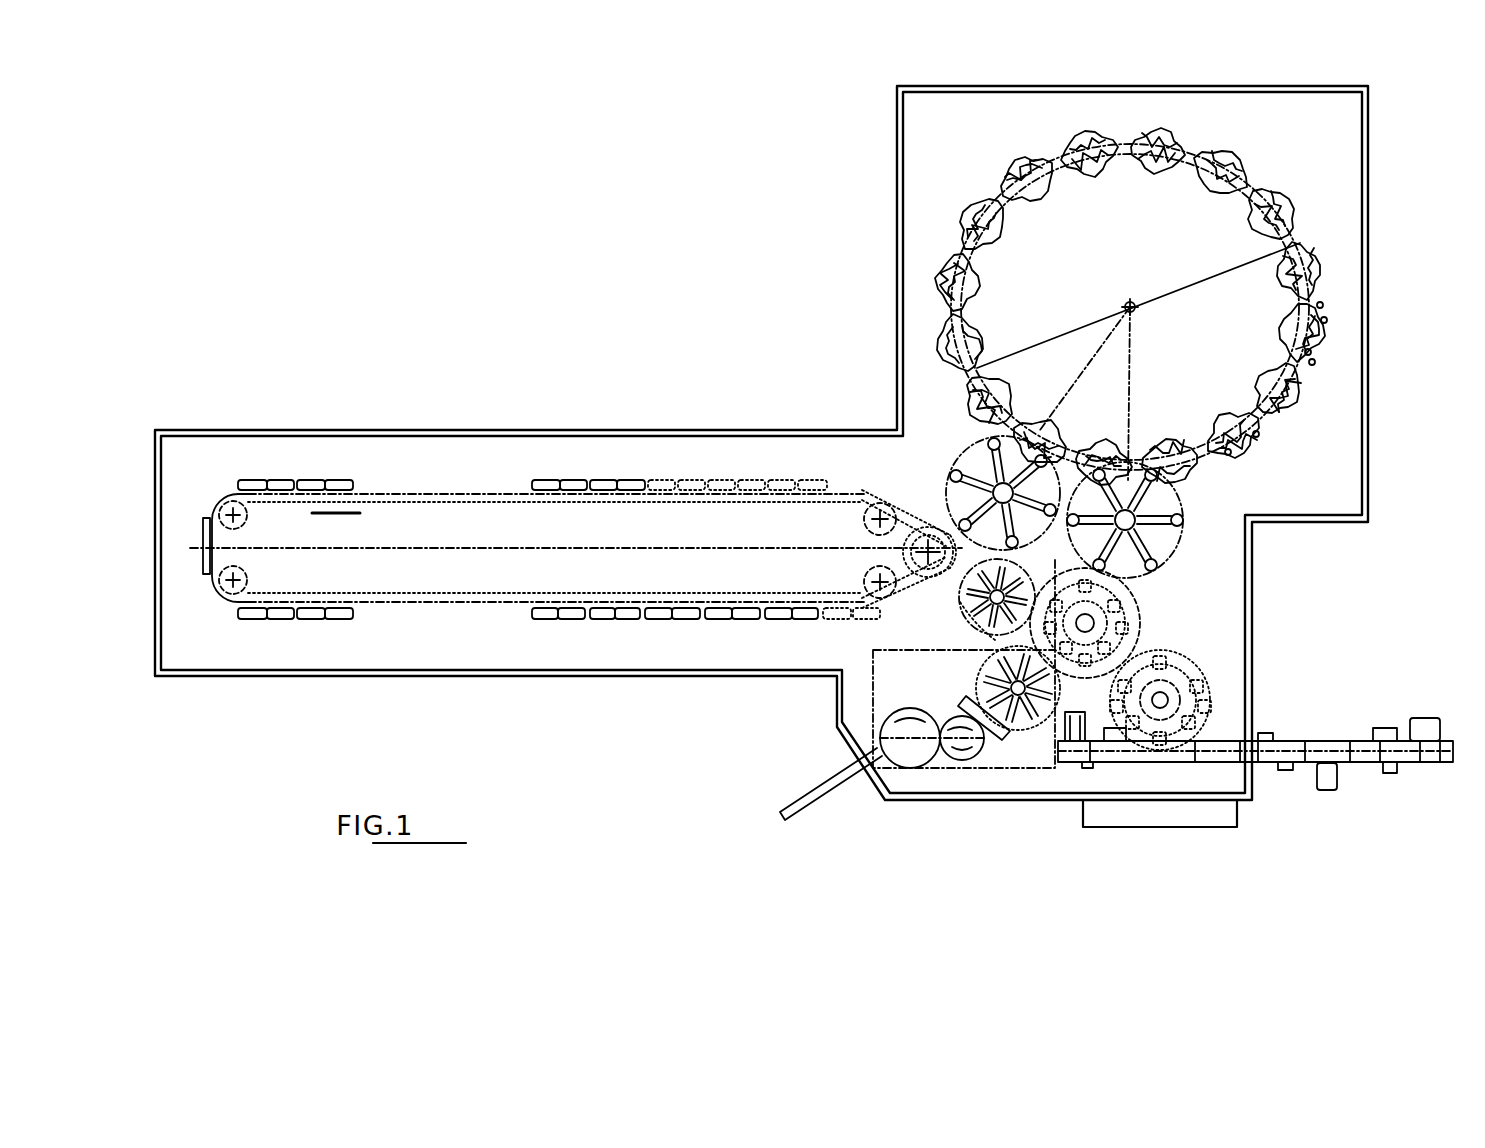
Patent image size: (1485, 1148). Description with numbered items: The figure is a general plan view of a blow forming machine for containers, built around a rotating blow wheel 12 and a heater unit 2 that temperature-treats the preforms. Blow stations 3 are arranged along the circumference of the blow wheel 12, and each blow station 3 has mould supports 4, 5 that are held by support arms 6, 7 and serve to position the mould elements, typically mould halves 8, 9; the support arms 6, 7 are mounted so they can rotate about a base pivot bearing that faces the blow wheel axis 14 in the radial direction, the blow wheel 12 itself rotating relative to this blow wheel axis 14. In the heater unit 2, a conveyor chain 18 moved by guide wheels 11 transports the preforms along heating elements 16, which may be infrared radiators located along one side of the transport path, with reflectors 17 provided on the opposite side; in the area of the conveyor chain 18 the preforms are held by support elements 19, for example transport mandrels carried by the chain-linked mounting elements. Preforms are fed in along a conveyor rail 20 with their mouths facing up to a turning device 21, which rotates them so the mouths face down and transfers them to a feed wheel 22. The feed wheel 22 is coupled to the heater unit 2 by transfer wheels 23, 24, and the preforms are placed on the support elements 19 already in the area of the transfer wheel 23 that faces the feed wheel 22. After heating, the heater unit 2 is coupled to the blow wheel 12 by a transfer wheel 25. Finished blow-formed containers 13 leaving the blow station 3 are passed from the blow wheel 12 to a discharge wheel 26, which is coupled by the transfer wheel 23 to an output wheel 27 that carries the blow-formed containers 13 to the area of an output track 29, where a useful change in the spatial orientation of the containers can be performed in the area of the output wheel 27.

The heater unit 2 is at (455, 512).
The blow station 3 is at (1298, 190).
The mould support 4 is at (1330, 318).
The mould support 5 is at (1310, 353).
The support arm 6 is at (1322, 303).
The support arm 7 is at (1322, 362).
The mould half 8 is at (1260, 435).
The mould half 9 is at (1230, 452).
The guide wheel 11 is at (228, 500).
The blow wheel 12 is at (1300, 235).
The blow-formed container 13 is at (1130, 745).
The blow wheel axis 14 is at (1127, 302).
The heating element 16 is at (316, 480).
The reflector 17 is at (345, 515).
The conveyor chain 18 is at (490, 495).
The support element 19 is at (868, 505).
The conveyor rail 20 is at (850, 782).
The turning device 21 is at (1003, 722).
The feed wheel 22 is at (1035, 718).
The transfer wheel 23 is at (1140, 605).
The transfer wheel 24 is at (960, 602).
The transfer wheel 25 is at (953, 480).
The discharge wheel 26 is at (1165, 560).
The output wheel 27 is at (1212, 716).
The output track 29 is at (1262, 762).